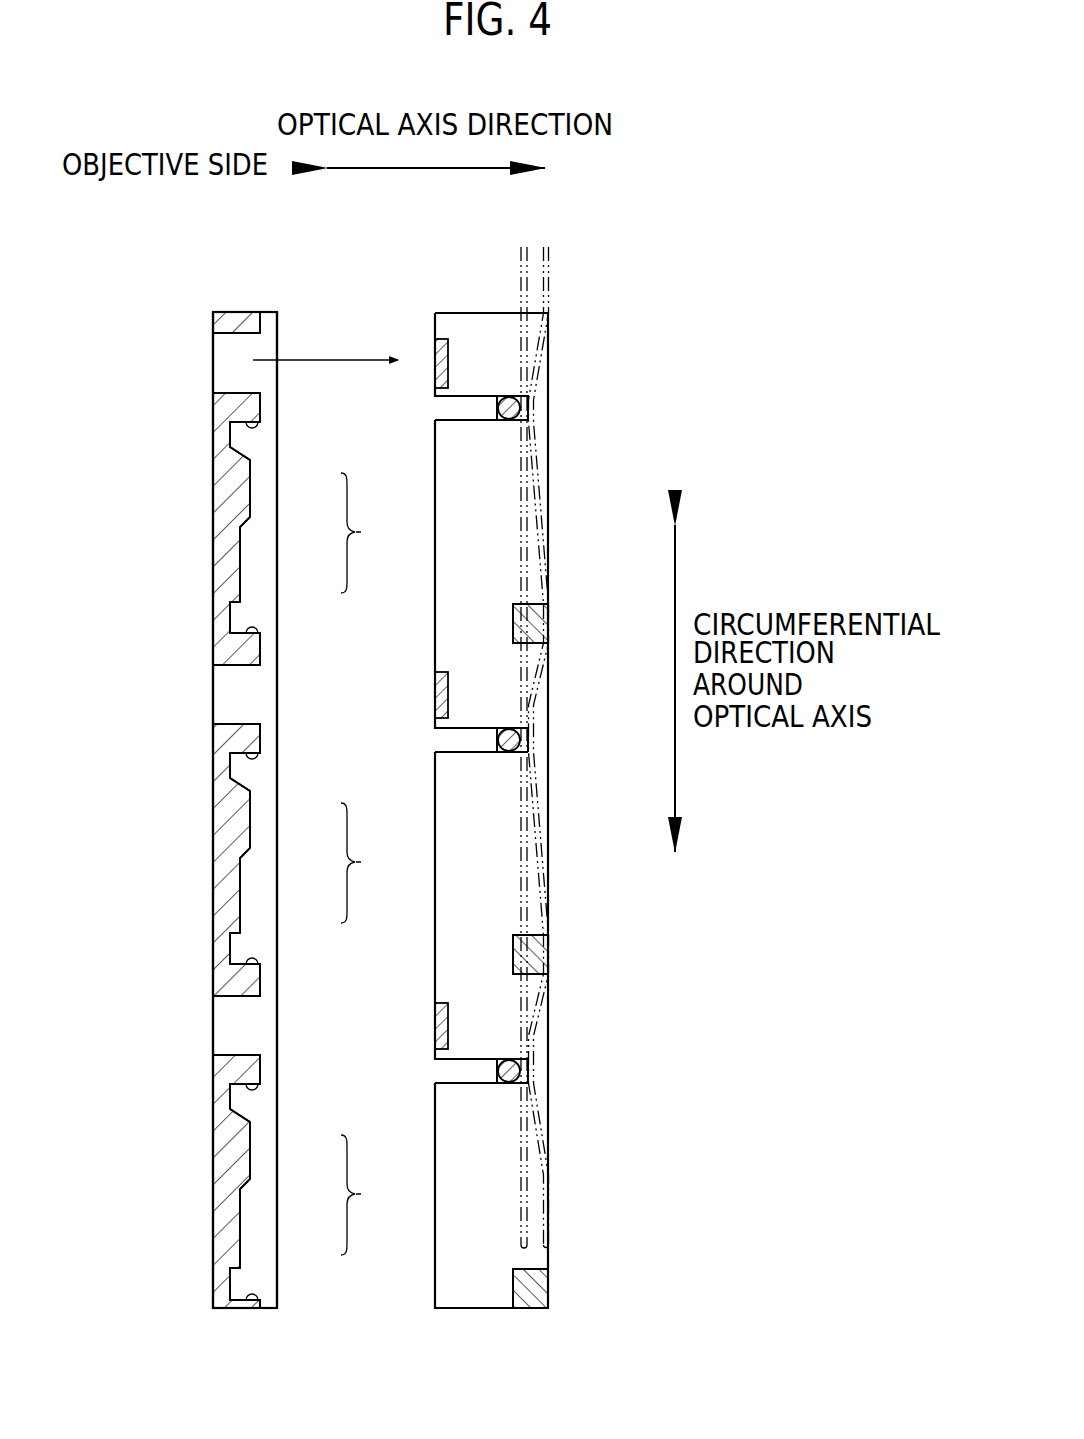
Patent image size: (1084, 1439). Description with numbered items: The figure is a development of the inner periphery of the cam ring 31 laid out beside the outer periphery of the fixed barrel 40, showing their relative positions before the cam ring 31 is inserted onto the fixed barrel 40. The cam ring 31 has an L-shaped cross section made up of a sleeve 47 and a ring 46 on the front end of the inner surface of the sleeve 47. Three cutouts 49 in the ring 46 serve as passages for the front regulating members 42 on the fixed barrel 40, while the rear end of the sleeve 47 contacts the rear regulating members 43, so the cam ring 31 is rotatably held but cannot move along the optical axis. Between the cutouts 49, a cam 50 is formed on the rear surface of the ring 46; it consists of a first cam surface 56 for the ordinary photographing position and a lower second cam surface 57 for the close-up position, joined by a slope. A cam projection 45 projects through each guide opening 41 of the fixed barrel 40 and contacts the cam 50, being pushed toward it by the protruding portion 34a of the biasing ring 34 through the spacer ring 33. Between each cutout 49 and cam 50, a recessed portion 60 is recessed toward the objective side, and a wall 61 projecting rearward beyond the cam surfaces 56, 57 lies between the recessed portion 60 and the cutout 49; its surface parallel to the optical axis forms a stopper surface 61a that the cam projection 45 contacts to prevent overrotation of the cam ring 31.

The cam ring 31 is at (213, 1250).
The spacer ring 33 is at (524, 250).
The biasing ring 34 is at (548, 248).
The protruding portion 34a is at (530, 410).
The fixed barrel 40 is at (553, 326).
The guide opening 41 is at (466, 425).
The front regulating member 42 is at (440, 360).
The rear regulating member 43 is at (538, 626).
The cam projection 45 is at (508, 402).
The ring 46 is at (213, 1144).
The sleeve 47 is at (278, 980).
The cutout 49 is at (228, 366).
The cam 50 is at (371, 864).
The first cam surface 56 is at (253, 490).
The second cam surface 57 is at (243, 570).
The recessed portion 60 is at (248, 440).
The wall 61 is at (230, 322).
The stopper surface 61a is at (262, 426).